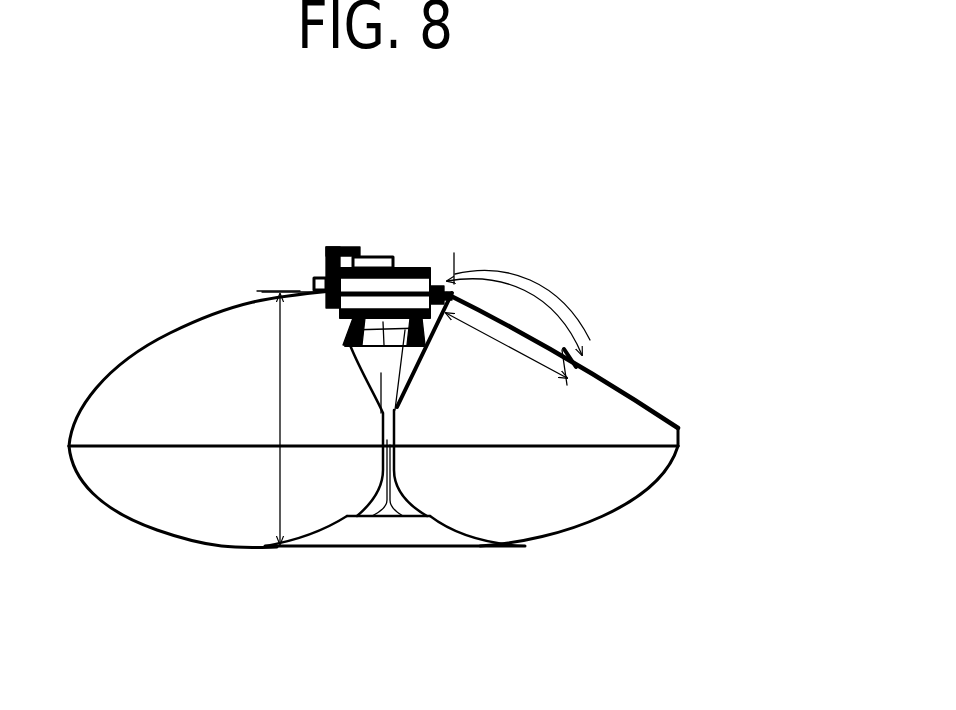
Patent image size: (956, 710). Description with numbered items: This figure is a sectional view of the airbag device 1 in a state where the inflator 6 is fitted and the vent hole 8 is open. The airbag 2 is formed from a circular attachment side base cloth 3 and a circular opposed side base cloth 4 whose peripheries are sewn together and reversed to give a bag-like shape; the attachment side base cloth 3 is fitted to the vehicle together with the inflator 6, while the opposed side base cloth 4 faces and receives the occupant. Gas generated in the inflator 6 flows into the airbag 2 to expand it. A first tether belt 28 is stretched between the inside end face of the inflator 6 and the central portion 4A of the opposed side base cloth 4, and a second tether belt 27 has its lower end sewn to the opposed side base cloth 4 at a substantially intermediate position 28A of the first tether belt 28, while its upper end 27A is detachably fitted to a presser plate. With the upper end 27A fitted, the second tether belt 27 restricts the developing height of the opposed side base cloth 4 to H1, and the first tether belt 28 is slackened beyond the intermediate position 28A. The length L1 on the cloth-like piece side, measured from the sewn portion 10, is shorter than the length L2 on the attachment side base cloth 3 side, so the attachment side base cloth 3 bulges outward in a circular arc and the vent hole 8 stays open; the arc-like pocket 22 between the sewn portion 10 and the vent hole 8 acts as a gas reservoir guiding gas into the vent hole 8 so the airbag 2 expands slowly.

The airbag device 1 is at (453, 153).
The airbag 2 is at (146, 417).
The attachment side base cloth 3 is at (160, 340).
The opposed side base cloth 4 is at (117, 508).
The central portion of the opposed side base cloth 4A is at (387, 527).
The inflator 6 is at (408, 267).
The vent hole 8 is at (584, 362).
The sewn portion 10 is at (570, 378).
The arc-like pocket 22 is at (580, 344).
The second tether belt 27 is at (422, 360).
The upper end of the second tether belt 27A is at (458, 297).
The first tether belt 28 is at (370, 360).
The intermediate position of the first tether belt 28A is at (397, 412).
The developing height H1 is at (269, 417).
The length at the cloth-like piece side L1 is at (506, 321).
The length at the attachment side base cloth side L2 is at (518, 304).